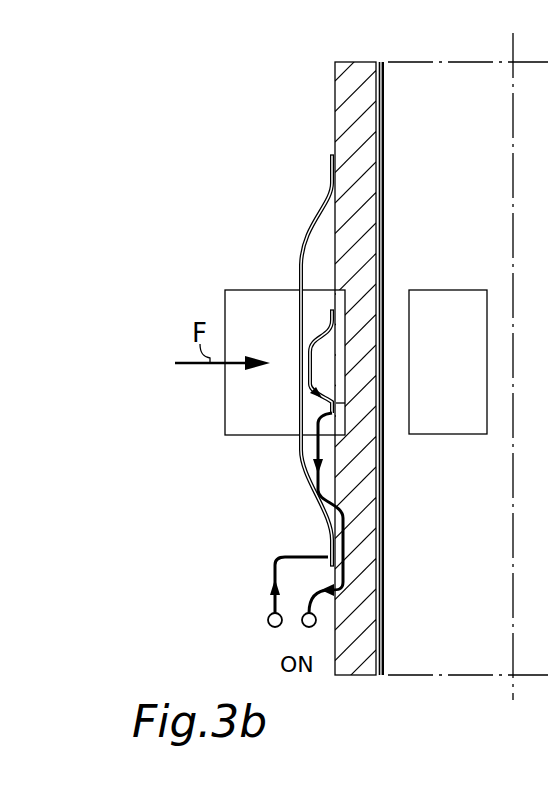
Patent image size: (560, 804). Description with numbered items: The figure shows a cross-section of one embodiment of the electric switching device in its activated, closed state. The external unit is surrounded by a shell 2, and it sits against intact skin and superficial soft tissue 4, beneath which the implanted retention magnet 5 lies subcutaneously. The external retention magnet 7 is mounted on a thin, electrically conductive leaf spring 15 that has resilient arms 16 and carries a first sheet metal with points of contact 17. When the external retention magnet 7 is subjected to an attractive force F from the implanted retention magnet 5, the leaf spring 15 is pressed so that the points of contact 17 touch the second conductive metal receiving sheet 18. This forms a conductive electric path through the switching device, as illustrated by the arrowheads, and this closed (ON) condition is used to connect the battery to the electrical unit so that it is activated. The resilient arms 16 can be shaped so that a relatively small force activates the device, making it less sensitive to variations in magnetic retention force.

The shell 2 is at (340, 118).
The skin and superficial soft tissue 4 is at (413, 175).
The implanted retention magnet 5 is at (455, 376).
The external retention magnet 7 is at (270, 345).
The leaf spring 15 is at (299, 282).
The resilient arms 16 is at (296, 192).
The points of contact 17 is at (328, 313).
The second conductive metal receiving sheet 18 is at (345, 403).